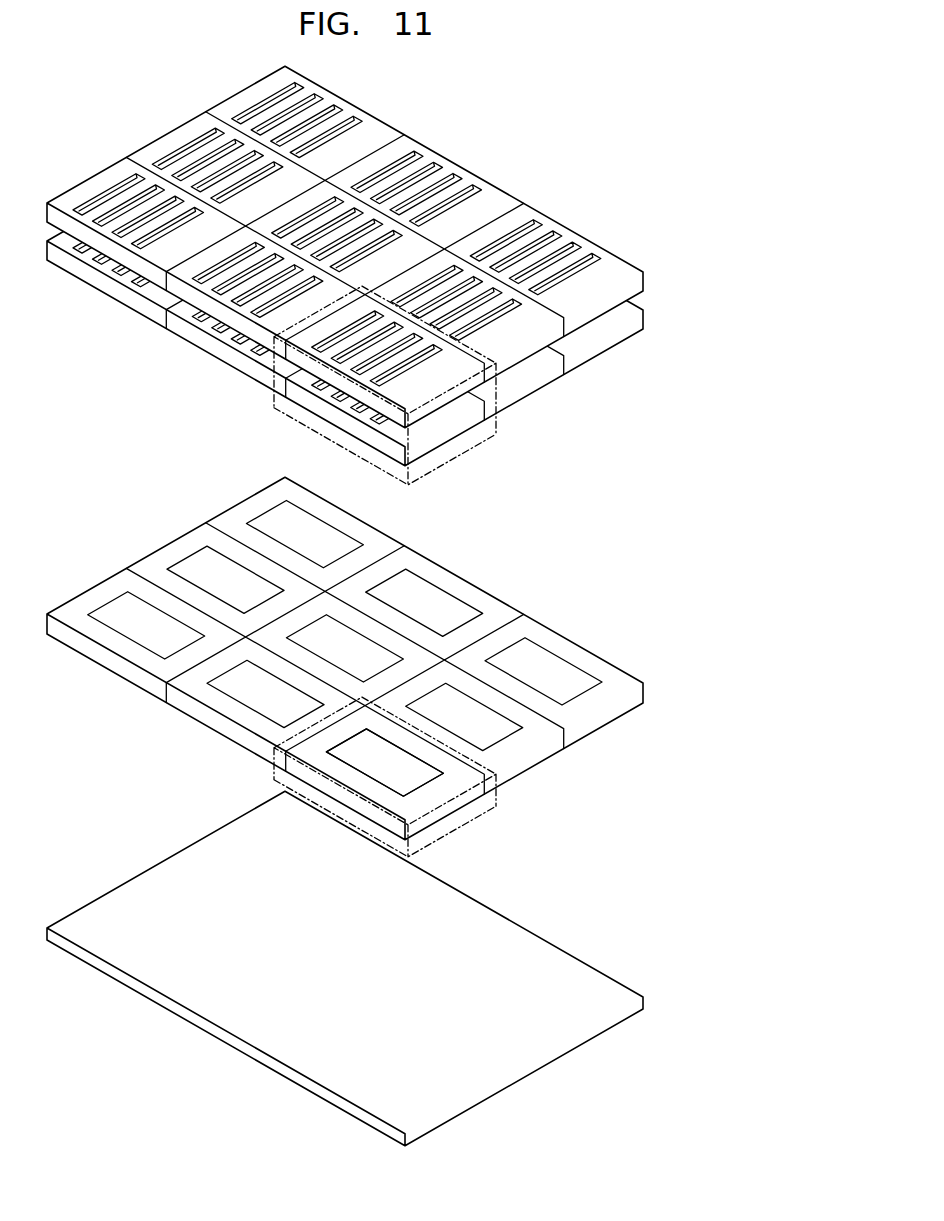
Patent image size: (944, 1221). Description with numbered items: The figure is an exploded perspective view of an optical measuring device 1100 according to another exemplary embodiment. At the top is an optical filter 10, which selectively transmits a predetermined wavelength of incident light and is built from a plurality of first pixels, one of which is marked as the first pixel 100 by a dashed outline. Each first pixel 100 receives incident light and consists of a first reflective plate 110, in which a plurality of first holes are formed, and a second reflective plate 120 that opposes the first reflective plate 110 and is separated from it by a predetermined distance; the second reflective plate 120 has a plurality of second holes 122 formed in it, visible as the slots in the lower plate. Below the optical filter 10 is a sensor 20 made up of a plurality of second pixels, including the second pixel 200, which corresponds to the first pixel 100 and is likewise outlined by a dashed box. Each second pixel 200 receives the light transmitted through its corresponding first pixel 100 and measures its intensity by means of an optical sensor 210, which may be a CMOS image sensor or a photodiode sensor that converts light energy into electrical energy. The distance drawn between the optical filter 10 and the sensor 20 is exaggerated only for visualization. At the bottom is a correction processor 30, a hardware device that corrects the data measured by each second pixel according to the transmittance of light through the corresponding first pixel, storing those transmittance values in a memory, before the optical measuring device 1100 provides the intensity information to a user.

The optical measuring device 1100 is at (116, 79).
The optical filter 10 is at (358, 283).
The first reflective plate 110 is at (440, 372).
The second reflective plate 120 is at (325, 417).
The second holes 122 is at (390, 432).
The first pixel 100 is at (453, 457).
The sensor 20 is at (358, 680).
The optical sensor 210 is at (430, 790).
The second pixel 200 is at (433, 843).
The correction processor 30 is at (358, 968).